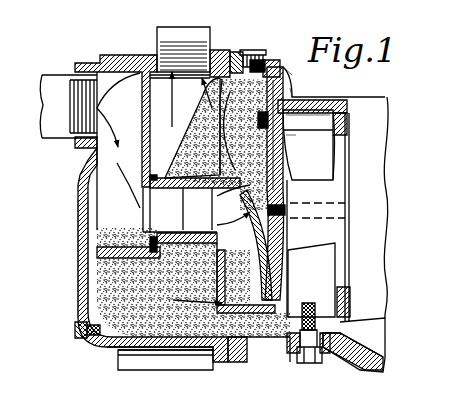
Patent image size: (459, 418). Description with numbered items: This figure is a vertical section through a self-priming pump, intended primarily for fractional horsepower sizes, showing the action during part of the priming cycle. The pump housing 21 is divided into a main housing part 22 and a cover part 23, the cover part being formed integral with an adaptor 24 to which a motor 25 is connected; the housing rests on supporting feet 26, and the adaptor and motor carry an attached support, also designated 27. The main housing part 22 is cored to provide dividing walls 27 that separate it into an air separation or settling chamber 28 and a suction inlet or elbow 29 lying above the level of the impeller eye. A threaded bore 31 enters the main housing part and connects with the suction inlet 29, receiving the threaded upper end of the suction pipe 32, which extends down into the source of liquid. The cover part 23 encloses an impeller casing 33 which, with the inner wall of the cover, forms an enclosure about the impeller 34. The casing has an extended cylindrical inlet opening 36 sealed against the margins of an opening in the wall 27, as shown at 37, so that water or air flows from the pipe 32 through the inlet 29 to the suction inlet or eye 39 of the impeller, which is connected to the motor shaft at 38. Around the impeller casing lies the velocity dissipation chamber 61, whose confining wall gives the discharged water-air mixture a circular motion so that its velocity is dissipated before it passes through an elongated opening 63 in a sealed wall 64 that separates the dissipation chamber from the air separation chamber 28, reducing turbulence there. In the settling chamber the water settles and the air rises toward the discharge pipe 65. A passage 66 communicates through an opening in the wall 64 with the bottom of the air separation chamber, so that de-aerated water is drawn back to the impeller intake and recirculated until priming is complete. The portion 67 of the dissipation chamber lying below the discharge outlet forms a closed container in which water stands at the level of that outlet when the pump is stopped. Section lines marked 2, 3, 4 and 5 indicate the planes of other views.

The section line 2- 2 is at (123, 395).
The section line 3-3 / nut 3 is at (182, 385).
The section line 4- 4 is at (243, 395).
The section line 5- 5 is at (265, 382).
The pump housing 21 is at (81, 262).
The main housing part 22 is at (87, 296).
The cover part 23 is at (333, 95).
The adaptor 24 is at (388, 104).
The motor 25 is at (389, 303).
The supporting feet 26 is at (136, 360).
The dividing walls 27 is at (208, 92).
The air separation chamber 28 is at (118, 347).
The suction inlet 29 is at (97, 153).
The threaded bore 31 is at (78, 63).
The suction pipe 32 is at (60, 132).
The impeller casing 33 is at (288, 152).
The impeller 34 is at (285, 187).
The cylindrical inlet opening 36 is at (168, 240).
The seal 37 is at (164, 212).
The motor shaft connection 38 is at (290, 228).
The suction inlet or eye 39 is at (214, 196).
The velocity dissipation chamber 61 is at (318, 127).
The elongated opening 63 is at (283, 73).
The sealed wall 64 is at (284, 91).
The discharge pipe 65 is at (160, 38).
The passage 66 is at (283, 306).
The portion of the velocity dissipation chamber 67 is at (290, 134).